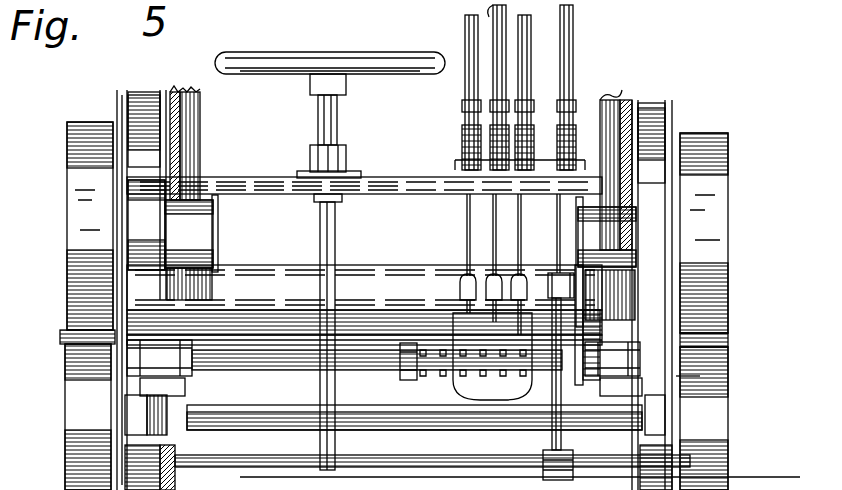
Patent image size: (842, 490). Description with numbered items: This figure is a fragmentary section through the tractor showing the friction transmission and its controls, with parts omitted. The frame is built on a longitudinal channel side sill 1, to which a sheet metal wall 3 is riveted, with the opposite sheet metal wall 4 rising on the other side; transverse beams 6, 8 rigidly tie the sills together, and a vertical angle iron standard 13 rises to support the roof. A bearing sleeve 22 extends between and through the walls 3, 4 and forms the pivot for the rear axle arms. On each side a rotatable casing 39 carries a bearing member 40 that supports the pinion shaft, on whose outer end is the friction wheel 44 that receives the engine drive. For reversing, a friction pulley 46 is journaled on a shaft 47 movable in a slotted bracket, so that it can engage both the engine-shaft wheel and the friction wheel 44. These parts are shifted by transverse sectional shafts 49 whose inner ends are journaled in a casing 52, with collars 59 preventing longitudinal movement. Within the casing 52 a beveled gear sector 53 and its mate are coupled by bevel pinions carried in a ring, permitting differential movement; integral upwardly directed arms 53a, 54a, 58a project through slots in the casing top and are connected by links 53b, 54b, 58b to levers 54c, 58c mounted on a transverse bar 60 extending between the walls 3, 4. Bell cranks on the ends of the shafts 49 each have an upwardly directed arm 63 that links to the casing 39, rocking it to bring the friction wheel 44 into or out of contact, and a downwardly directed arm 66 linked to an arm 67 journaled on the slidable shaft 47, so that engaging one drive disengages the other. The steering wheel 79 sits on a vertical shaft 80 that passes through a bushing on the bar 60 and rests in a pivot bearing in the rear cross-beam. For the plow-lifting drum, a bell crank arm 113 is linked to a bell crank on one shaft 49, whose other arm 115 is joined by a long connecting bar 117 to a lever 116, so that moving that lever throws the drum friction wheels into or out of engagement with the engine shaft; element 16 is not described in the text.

The longitudinal channel side sill 1 is at (394, 290).
The sheet metal wall 3 is at (176, 96).
The sheet metal wall 4 is at (615, 93).
The transverse beam 6 is at (590, 325).
The transverse beam 8 is at (487, 472).
The vertical angle iron standard 13 is at (187, 288).
The pin 16 is at (766, 353).
The bearing sleeve 22 is at (364, 305).
The rotatable casing 39 is at (396, 137).
The bearing member 40 is at (634, 236).
The friction pulley or wheel 44 is at (690, 205).
The friction pulley 46 is at (394, 410).
The shaft 47 is at (482, 431).
The sectional shaft 49 is at (296, 357).
The casing 52 is at (476, 356).
The beveled gear sector 53 is at (465, 40).
The upwardly directed arm 53a is at (467, 315).
The link 53b is at (466, 226).
The upwardly directed arm 54a is at (512, 329).
The link 54b is at (521, 226).
The lever 54c is at (523, 62).
The upwardly directed arm 58a is at (490, 323).
The link 58b is at (494, 236).
The lever 58c is at (496, 85).
The collar 59 is at (405, 369).
The transverse bar 60 is at (390, 192).
The upwardly directed arm 63 is at (212, 350).
The downwardly directed arm 66 is at (138, 383).
The upwardly directed arm 67 is at (398, 442).
The steering wheel 79 is at (354, 75).
The vertical shaft 80 is at (321, 246).
The bell crank arm 113 is at (552, 444).
The bell crank arm 115 is at (551, 296).
The lever 116 is at (564, 76).
The long connecting bar 117 is at (558, 253).